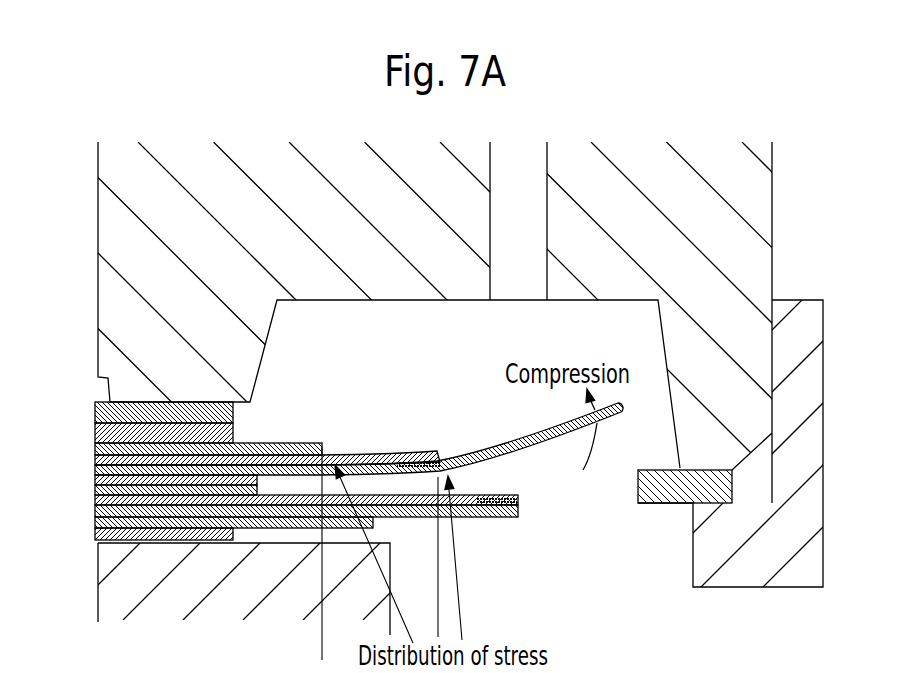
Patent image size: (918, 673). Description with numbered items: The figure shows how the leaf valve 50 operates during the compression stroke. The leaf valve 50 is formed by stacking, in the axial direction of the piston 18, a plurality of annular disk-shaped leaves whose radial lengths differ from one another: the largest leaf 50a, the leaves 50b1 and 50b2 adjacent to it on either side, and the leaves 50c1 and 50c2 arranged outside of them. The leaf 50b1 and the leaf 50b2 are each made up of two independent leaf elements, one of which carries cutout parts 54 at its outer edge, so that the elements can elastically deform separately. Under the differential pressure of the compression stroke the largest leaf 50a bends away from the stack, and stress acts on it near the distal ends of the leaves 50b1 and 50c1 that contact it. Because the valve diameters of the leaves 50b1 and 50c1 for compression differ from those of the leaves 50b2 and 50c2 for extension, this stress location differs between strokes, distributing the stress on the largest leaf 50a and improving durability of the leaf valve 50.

The piston 18 is at (760, 136).
The leaf valve 50 is at (377, 526).
The largest leaf 50a is at (558, 437).
The leaf 50b1 is at (384, 444).
The leaf 50b2 is at (470, 532).
The leaf 50c1 is at (242, 443).
The leaf 50c2 is at (247, 530).
The cutout parts 54 is at (440, 462).